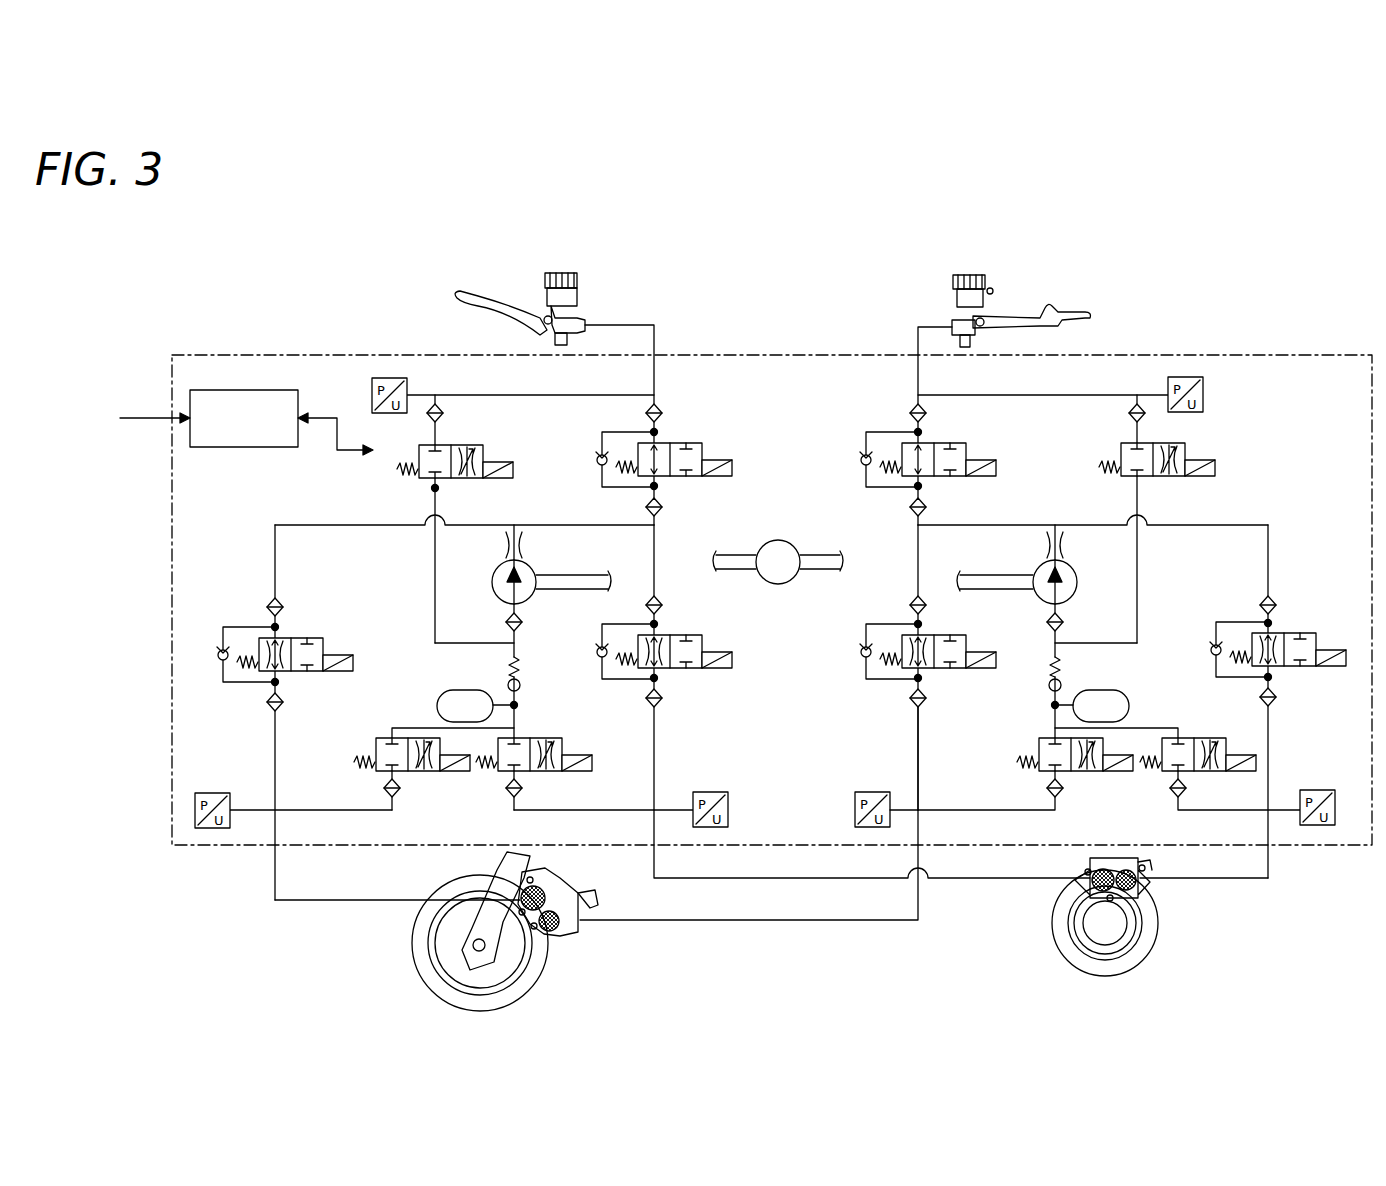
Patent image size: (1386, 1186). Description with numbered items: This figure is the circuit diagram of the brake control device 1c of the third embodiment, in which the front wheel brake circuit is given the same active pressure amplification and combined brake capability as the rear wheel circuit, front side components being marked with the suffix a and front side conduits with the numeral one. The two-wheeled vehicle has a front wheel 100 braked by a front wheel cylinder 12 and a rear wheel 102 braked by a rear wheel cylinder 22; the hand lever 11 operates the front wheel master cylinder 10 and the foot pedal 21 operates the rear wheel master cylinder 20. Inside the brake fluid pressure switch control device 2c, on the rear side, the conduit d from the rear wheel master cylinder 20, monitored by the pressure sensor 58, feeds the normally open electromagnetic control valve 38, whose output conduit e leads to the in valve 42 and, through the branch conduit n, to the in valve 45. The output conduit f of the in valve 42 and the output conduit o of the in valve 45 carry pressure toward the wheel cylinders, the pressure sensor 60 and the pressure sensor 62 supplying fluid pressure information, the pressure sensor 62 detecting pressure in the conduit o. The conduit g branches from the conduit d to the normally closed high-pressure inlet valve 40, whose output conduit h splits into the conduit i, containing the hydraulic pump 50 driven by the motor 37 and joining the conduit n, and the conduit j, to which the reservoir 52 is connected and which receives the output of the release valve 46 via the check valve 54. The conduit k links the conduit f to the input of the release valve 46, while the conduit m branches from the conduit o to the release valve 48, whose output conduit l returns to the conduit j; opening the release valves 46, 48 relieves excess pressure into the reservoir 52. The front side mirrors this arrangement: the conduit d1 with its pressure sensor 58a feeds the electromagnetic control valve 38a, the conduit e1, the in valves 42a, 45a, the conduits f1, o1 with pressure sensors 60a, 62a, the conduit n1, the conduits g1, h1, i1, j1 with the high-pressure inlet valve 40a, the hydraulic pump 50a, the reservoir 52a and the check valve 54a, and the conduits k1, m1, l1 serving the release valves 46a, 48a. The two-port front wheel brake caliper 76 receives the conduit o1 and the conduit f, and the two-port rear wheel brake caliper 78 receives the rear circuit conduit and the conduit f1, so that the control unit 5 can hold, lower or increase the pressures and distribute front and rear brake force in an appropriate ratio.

The brake control device 1c is at (292, 328).
The brake fluid pressure switch control device 2c is at (172, 572).
The control unit 5 is at (232, 448).
The front wheel master cylinder 10 is at (600, 305).
The hand lever 11 is at (457, 298).
The front wheel cylinder 12 is at (600, 908).
The rear wheel master cylinder 20 is at (940, 305).
The foot pedal 21 is at (1095, 310).
The rear wheel cylinder 22 is at (1165, 862).
The motor 37 is at (778, 540).
The electromagnetic control valve 38 is at (900, 442).
The electromagnetic control valve 38a is at (708, 460).
The high-pressure inlet valve 40 is at (1216, 462).
The high-pressure inlet valve 40a is at (496, 478).
The in valve 42 is at (900, 626).
The in valve 42a is at (702, 632).
The in valve 45 is at (1312, 632).
The in valve 45a is at (298, 637).
The release valve 46 is at (1080, 772).
The release valve 46a is at (570, 752).
The release valve 48 is at (1215, 738).
The release valve 48a is at (430, 772).
The hydraulic pump 50 is at (1033, 592).
The hydraulic pump 50a is at (537, 590).
The reservoir 52 is at (1130, 702).
The reservoir 52a is at (437, 705).
The check valve 54 is at (1062, 663).
The check valve 54a is at (508, 668).
The pressure sensor 58 is at (1205, 395).
The pressure sensor 58a is at (372, 393).
The pressure sensor 60 is at (866, 792).
The pressure sensor 60a is at (720, 792).
The pressure sensor 62 is at (1323, 790).
The pressure sensor 62a is at (208, 793).
The front wheel brake caliper 76 is at (562, 886).
The rear wheel brake caliper 78 is at (1088, 866).
The front wheel 100 is at (412, 965).
The rear wheel 102 is at (1155, 950).
The conduit d is at (914, 340).
The conduit d1 is at (657, 340).
The conduit e is at (915, 550).
The conduit e1 is at (657, 553).
The conduit f is at (915, 762).
The conduit f1 is at (658, 760).
The conduit g is at (1033, 398).
The conduit g1 is at (548, 398).
The conduit h is at (1139, 572).
The conduit h1 is at (433, 575).
The conduit i is at (1050, 614).
The conduit i1 is at (520, 616).
The conduit j is at (1050, 710).
The conduit j1 is at (520, 710).
The conduit k is at (968, 810).
The conduit k1 is at (597, 810).
The conduit l is at (1160, 728).
The conduit l1 is at (425, 728).
The conduit m is at (1210, 810).
The conduit m1 is at (328, 810).
The conduit n is at (1032, 525).
The conduit n1 is at (343, 527).
The conduit o is at (1272, 738).
The conduit o1 is at (272, 735).